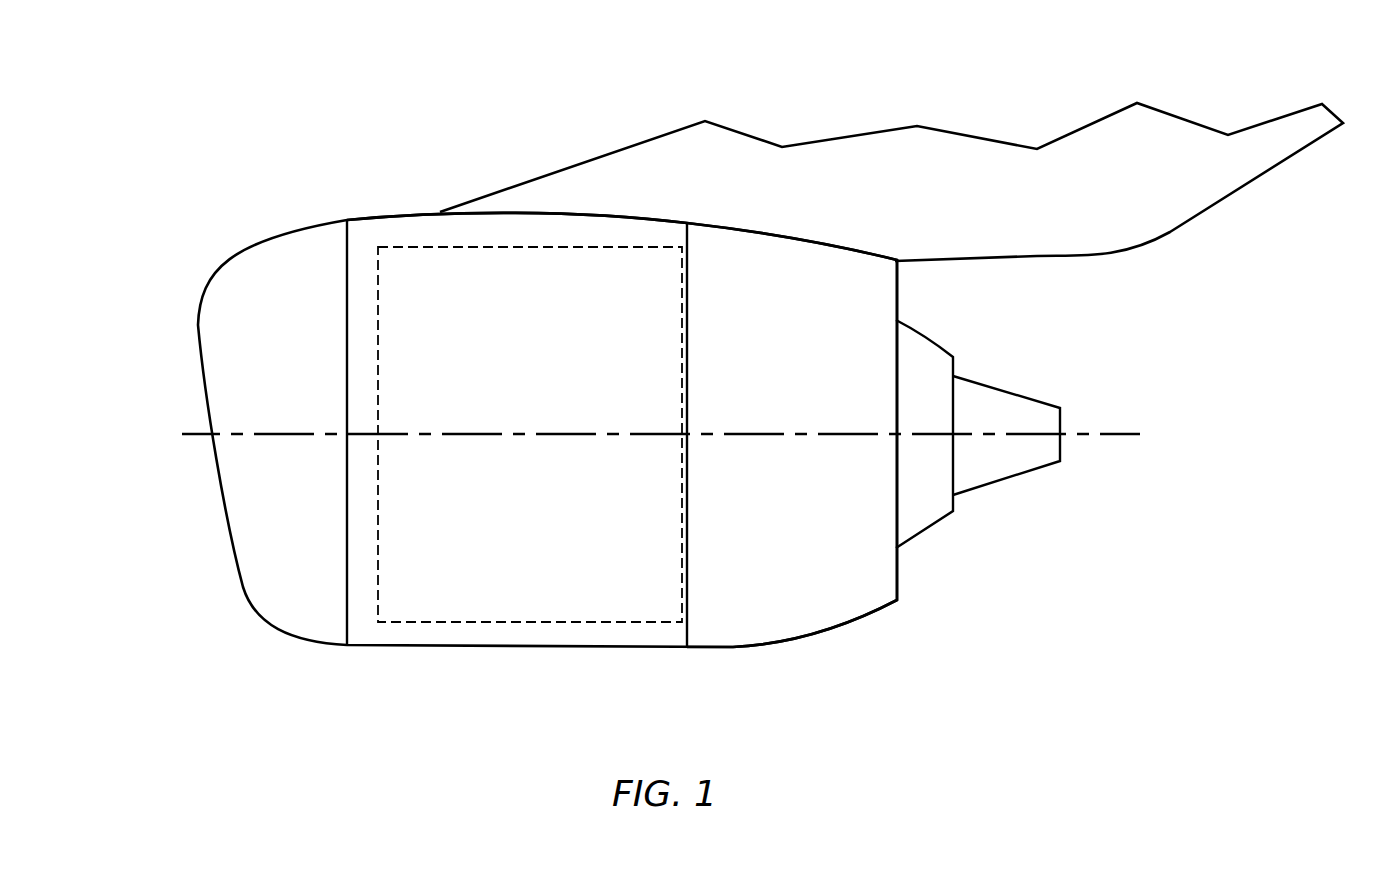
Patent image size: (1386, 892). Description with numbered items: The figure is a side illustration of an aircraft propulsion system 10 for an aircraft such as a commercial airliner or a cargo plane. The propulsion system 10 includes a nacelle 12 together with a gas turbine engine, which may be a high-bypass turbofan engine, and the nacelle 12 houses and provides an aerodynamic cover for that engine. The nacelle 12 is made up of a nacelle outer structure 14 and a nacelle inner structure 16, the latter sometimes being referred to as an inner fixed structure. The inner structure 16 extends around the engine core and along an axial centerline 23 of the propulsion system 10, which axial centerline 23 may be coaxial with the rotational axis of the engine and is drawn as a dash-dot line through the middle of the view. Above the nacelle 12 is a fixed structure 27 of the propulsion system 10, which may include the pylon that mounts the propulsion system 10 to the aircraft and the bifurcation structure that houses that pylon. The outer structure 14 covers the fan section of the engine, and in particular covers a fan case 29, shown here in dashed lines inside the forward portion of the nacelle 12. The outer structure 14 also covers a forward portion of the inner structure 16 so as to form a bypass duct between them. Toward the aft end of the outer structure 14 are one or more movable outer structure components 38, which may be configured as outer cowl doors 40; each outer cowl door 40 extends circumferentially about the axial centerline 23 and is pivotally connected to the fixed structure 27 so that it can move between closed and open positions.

The aircraft propulsion system 10 is at (200, 138).
The nacelle 12 is at (323, 207).
The nacelle outer structure 14 is at (387, 213).
The nacelle inner structure 16 is at (917, 330).
The axial centerline 23 is at (1128, 437).
The fixed structure 27 is at (585, 158).
The fan case 29 is at (470, 622).
The outer structure component 38 is at (795, 650).
The outer cowl door 40 is at (792, 435).